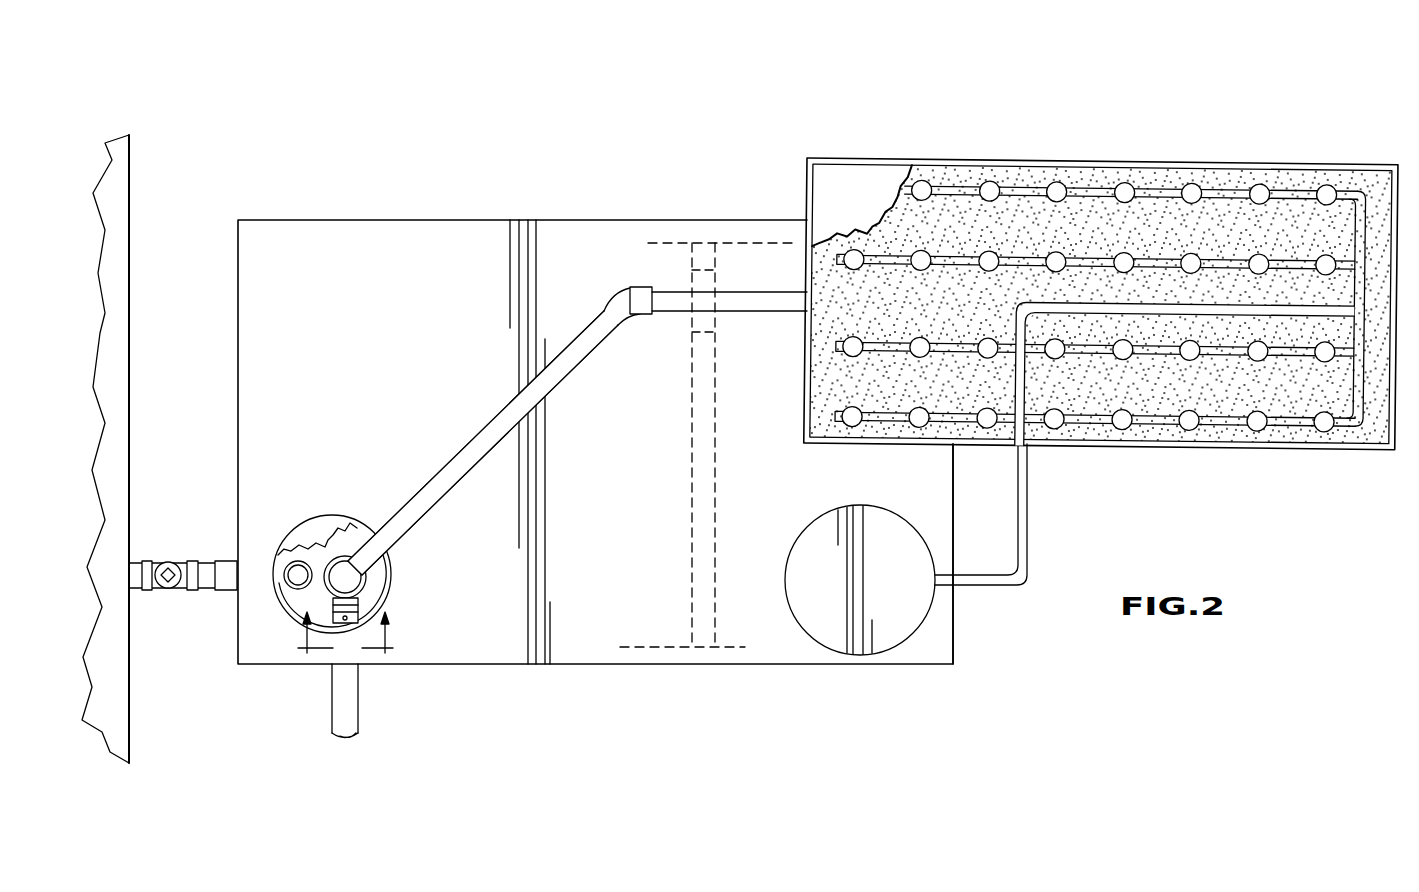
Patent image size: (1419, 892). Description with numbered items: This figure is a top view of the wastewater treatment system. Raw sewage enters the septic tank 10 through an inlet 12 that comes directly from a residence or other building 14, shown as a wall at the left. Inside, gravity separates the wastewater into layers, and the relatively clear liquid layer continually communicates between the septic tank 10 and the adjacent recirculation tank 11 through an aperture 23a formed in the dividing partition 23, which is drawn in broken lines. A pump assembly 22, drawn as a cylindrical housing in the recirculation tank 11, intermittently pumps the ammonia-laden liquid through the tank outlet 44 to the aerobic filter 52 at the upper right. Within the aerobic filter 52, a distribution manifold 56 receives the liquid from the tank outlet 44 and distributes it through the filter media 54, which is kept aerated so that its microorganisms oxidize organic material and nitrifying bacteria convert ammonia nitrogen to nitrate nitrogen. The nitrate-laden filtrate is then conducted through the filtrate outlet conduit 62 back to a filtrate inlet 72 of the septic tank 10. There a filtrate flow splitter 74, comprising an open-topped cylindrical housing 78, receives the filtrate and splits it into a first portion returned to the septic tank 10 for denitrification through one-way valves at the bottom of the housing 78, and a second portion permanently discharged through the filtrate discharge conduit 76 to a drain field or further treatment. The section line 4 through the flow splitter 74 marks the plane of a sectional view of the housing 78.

The section line 4- 4 is at (345, 638).
The septic tank 10 is at (628, 558).
The recirculation tank 11 is at (768, 559).
The inlet 12 is at (222, 560).
The residence or other building 14 is at (130, 388).
The pump assembly 22 is at (932, 648).
The dividing partition 23 is at (690, 478).
The aperture 23a is at (698, 332).
The tank outlet 44 is at (1027, 510).
The aerobic filter 52 is at (1101, 249).
The filter media 54 is at (1097, 210).
The distribution manifold 56 is at (1292, 185).
The filtrate outlet conduit 62 is at (503, 406).
The filtrate inlet 72 is at (332, 547).
The filtrate flow splitter 74 is at (368, 598).
The filtrate discharge conduit 76 is at (332, 714).
The cylindrical housing 78 is at (367, 584).